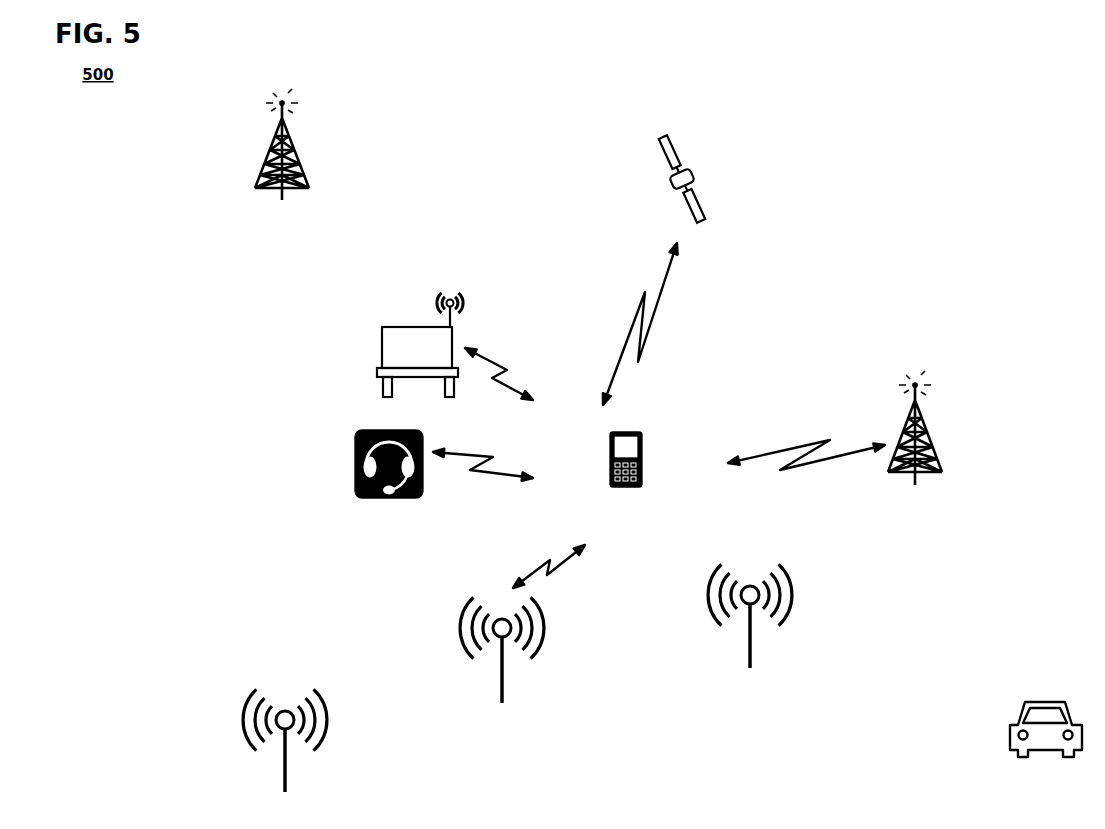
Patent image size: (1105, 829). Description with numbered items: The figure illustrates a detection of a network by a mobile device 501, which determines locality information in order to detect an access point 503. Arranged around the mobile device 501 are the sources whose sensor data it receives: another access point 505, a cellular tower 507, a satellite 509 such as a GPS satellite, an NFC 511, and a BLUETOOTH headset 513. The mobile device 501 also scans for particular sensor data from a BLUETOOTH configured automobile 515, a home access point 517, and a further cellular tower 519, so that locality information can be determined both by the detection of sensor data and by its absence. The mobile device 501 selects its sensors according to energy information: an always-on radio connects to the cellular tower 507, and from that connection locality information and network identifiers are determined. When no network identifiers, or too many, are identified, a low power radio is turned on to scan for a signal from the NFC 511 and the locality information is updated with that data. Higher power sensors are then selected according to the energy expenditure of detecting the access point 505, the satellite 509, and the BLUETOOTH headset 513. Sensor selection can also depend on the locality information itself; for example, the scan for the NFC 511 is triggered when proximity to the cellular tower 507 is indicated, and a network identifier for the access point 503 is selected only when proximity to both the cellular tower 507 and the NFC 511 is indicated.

The mobile device 501 is at (608, 485).
The access point 503 is at (747, 643).
The access point 505 is at (499, 688).
The cellular tower 507 is at (913, 482).
The satellite 509 is at (689, 215).
The NFC 511 is at (383, 379).
The BLUETOOTH headset 513 is at (357, 494).
The BLUETOOTH configured automobile 515 is at (1016, 755).
The home access point 517 is at (283, 777).
The cellular tower 519 is at (279, 197).